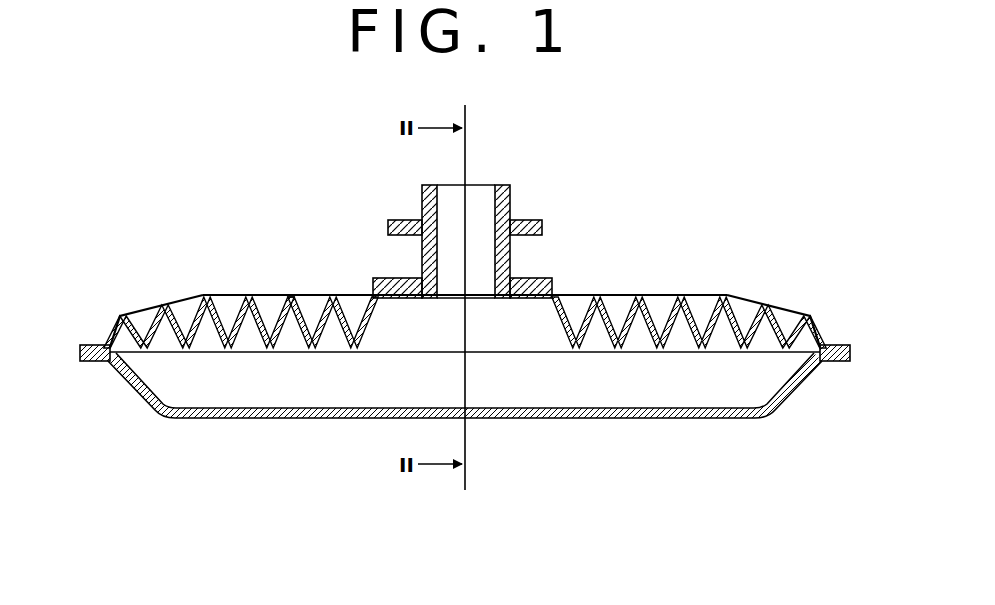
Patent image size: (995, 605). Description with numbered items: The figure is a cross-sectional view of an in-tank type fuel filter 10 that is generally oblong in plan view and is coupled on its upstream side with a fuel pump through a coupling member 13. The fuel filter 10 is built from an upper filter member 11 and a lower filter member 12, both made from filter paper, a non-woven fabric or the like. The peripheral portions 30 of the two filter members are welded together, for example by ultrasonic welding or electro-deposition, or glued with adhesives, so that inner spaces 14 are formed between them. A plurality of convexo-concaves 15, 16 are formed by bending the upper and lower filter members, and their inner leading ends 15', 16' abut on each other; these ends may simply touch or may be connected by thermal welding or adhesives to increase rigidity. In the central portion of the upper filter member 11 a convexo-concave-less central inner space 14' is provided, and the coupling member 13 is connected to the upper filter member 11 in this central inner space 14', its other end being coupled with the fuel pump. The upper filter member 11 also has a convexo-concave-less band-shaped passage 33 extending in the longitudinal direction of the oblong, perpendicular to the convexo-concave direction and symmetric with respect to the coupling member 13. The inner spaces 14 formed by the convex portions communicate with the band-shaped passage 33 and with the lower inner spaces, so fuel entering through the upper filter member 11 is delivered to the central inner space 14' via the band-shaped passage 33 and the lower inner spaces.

The fuel filter 10 is at (778, 290).
The upper filter member 11 is at (113, 342).
The lower filter member 12 is at (130, 392).
The coupling member 13 is at (512, 192).
The inner spaces 14 is at (539, 253).
The central inner space 14' is at (518, 244).
The convexo-concaves of the upper filter member 15 is at (465, 272).
The inner leading ends of the upper convexo-concaves 15' is at (333, 280).
The convexo-concaves of the lower filter member 16 is at (561, 431).
The inner leading ends of the lower convexo-concaves 16' is at (465, 431).
The peripheral portions 30 is at (86, 343).
The band-shaped passage 33 is at (227, 292).